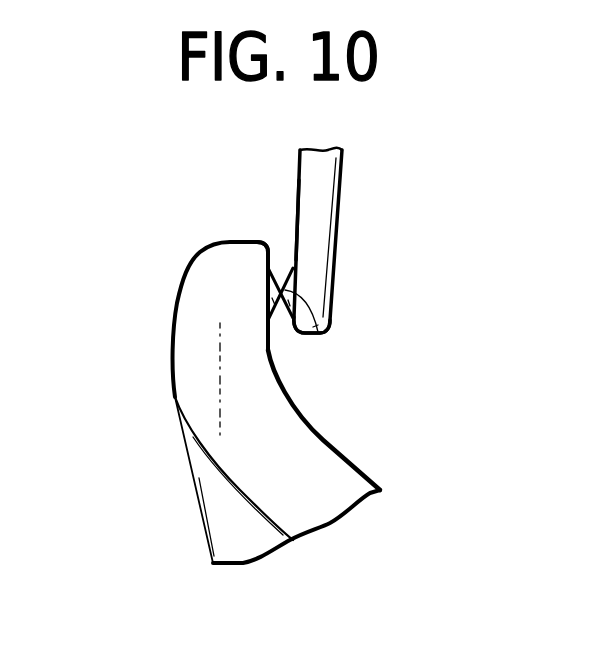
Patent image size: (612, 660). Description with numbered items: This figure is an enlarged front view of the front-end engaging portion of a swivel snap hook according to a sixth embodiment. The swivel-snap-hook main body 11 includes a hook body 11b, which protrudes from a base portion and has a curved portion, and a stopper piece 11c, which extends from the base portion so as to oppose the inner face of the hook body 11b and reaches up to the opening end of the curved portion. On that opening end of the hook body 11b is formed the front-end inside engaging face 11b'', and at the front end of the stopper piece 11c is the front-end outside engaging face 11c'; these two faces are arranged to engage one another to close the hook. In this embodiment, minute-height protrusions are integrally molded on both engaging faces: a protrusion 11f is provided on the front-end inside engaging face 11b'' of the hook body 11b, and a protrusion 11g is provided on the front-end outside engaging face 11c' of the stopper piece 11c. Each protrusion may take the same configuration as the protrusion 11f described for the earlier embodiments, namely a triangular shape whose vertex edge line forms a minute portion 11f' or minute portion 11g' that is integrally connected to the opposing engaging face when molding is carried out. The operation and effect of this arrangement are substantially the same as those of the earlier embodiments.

The swivel-snap-hook main body 11 is at (167, 495).
The hook body 11b is at (338, 539).
The front-end inside engaging face 11b'' is at (202, 212).
The stopper piece 11c is at (364, 240).
The front-end outside engaging face 11c' is at (363, 222).
The protrusion 11f is at (175, 280).
The minute portion 11f' is at (188, 313).
The protrusion 11g is at (351, 300).
The minute portion 11g' is at (367, 345).